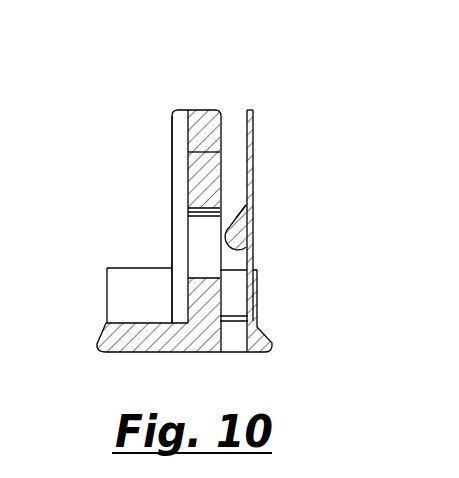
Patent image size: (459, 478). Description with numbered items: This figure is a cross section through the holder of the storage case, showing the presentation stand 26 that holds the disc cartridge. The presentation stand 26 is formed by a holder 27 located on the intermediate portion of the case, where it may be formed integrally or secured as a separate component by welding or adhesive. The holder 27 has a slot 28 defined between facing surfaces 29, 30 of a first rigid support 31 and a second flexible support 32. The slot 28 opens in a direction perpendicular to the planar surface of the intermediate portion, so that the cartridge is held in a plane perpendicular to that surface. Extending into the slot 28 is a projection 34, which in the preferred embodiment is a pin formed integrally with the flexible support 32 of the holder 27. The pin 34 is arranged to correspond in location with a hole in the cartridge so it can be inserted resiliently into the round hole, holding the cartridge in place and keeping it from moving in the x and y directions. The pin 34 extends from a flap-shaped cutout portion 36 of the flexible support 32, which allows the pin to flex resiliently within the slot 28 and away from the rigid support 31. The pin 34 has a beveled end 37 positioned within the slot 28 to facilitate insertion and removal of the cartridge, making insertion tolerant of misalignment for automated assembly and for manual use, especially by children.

The presentation stand 26 is at (133, 85).
The holder 27 is at (202, 108).
The slot 28 is at (236, 125).
The facing surface 29 is at (218, 200).
The facing surface 30 is at (248, 156).
The first rigid support 31 is at (175, 167).
The second flexible support 32 is at (253, 181).
The projection 34 is at (238, 238).
The flap-shaped cutout portion 36 is at (252, 207).
The beveled end 37 is at (220, 215).